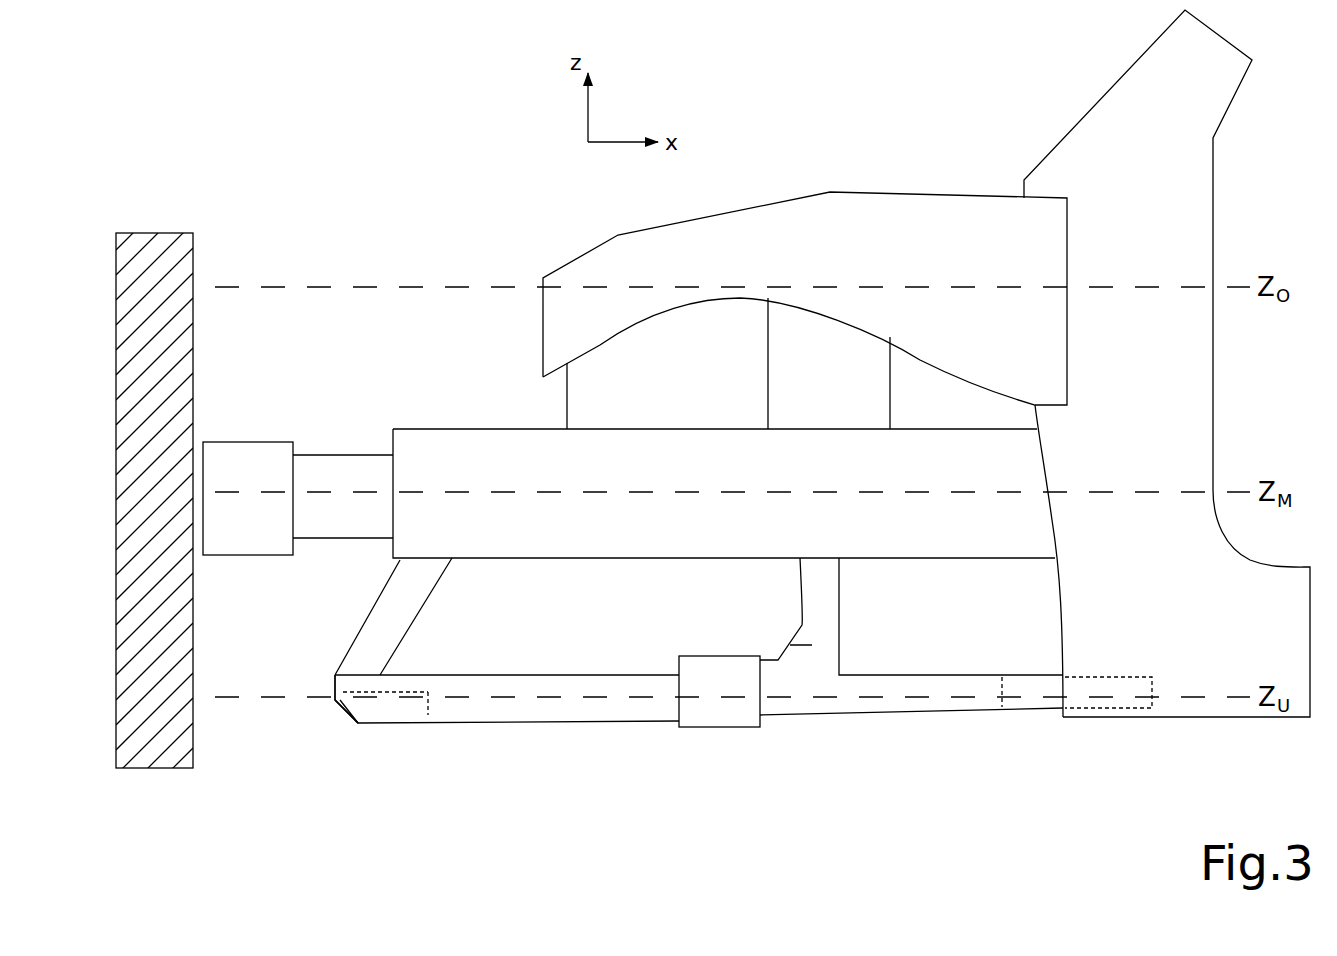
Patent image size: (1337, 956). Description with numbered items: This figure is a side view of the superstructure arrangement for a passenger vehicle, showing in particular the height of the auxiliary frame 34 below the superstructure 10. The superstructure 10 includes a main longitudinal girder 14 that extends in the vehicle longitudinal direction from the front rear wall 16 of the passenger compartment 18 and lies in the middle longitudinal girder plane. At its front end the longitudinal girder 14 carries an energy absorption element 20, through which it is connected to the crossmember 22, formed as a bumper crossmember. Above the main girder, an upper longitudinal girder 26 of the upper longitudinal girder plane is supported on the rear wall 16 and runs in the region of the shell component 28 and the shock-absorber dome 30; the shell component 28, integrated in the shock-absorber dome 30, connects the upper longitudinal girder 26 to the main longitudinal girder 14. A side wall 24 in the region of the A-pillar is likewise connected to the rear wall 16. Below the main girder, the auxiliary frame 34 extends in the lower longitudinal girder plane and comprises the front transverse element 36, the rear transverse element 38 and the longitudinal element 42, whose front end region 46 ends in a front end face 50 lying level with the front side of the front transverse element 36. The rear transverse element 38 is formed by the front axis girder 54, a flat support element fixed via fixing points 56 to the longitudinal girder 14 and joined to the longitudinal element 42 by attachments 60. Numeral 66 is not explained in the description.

The superstructure 10 is at (355, 168).
The main longitudinal girder 14 is at (653, 537).
The front rear wall 16 is at (1052, 587).
The passenger compartment 18 is at (1167, 363).
The energy absorption element 20 is at (328, 540).
The crossmember 22 is at (247, 467).
The side wall 24 is at (1092, 537).
The upper longitudinal girder 26 is at (872, 237).
The shell component 28 is at (667, 363).
The shock-absorber dome 30 is at (851, 383).
The auxiliary frame 34 is at (345, 718).
The front transverse element 36 is at (420, 708).
The rear transverse element 38 is at (1020, 700).
The longitudinal element 42 is at (533, 708).
The front end region 46 is at (358, 723).
The front end face 50 is at (335, 690).
The front axis girder 54 is at (1040, 717).
The fixing point 56 is at (427, 598).
The attachment 60 is at (720, 708).
The wall 66 is at (152, 250).